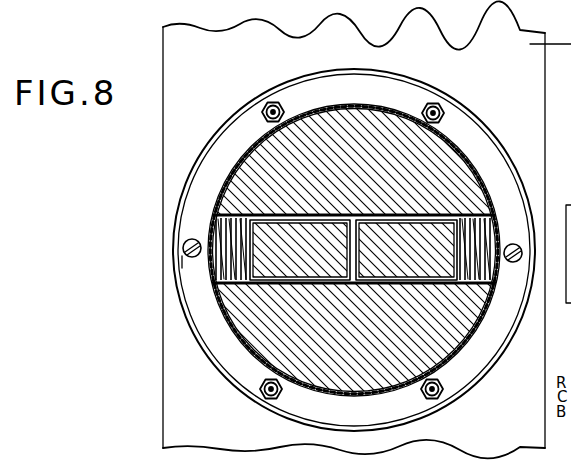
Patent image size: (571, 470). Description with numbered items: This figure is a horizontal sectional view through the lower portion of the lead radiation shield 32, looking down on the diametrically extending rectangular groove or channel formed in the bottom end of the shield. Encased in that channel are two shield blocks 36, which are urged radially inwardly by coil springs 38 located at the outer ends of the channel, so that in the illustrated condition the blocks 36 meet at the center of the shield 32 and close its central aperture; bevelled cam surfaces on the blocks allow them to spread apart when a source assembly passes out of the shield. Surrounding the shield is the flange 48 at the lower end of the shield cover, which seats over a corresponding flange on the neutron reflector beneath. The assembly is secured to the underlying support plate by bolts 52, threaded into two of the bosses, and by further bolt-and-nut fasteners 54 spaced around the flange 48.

The lead radiation shield 32 is at (430, 158).
The shield blocks 36 is at (237, 165).
The coil springs 38 is at (215, 214).
The flange 48 is at (195, 307).
The bolts 52 is at (184, 251).
The bolt-and-nut fasteners 54 is at (271, 103).